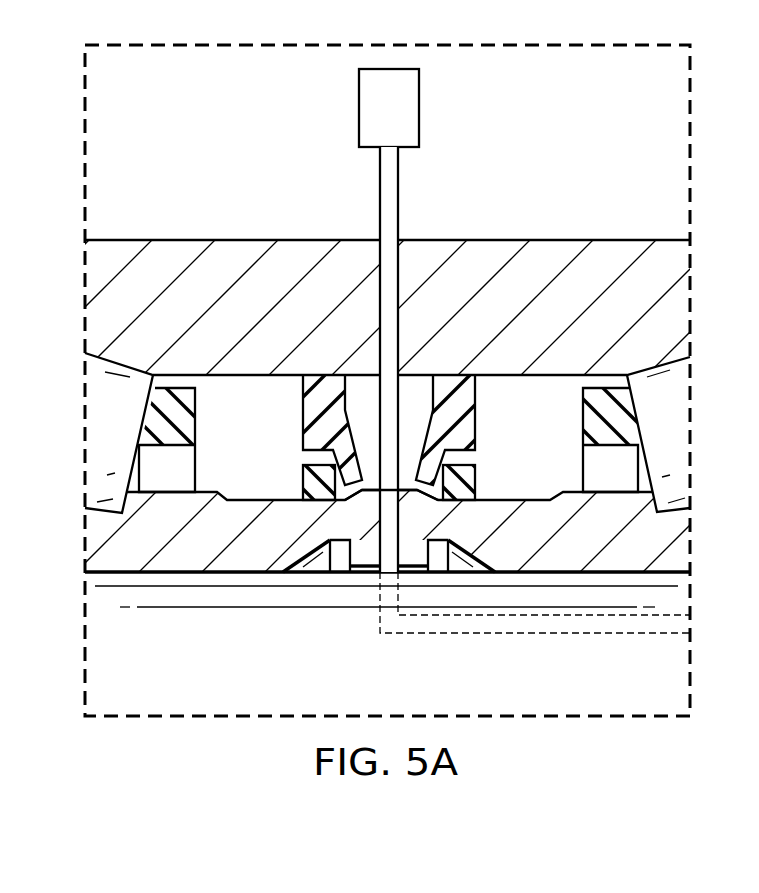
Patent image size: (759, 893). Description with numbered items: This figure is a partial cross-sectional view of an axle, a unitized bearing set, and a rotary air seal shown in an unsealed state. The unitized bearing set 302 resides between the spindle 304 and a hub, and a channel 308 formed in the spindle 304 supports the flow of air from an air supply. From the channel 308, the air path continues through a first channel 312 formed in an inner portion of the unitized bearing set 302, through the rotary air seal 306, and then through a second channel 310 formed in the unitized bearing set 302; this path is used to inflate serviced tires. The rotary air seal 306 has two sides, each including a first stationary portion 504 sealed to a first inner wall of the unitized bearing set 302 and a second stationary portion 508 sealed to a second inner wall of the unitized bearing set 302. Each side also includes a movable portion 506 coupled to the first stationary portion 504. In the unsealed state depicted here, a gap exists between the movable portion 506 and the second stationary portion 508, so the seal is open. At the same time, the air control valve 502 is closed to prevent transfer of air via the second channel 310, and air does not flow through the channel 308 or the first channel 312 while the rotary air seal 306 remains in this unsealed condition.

The unitized bearing set 302 is at (633, 218).
The spindle 304 is at (325, 677).
The rotary air seal 306 is at (376, 402).
The channel 308 is at (633, 636).
The second channel 310 is at (380, 194).
The first channel 312 is at (379, 535).
The air control valve 502 is at (359, 108).
The first stationary portion 504 is at (346, 402).
The movable portion 506 is at (362, 470).
The second stationary portion 508 is at (303, 473).